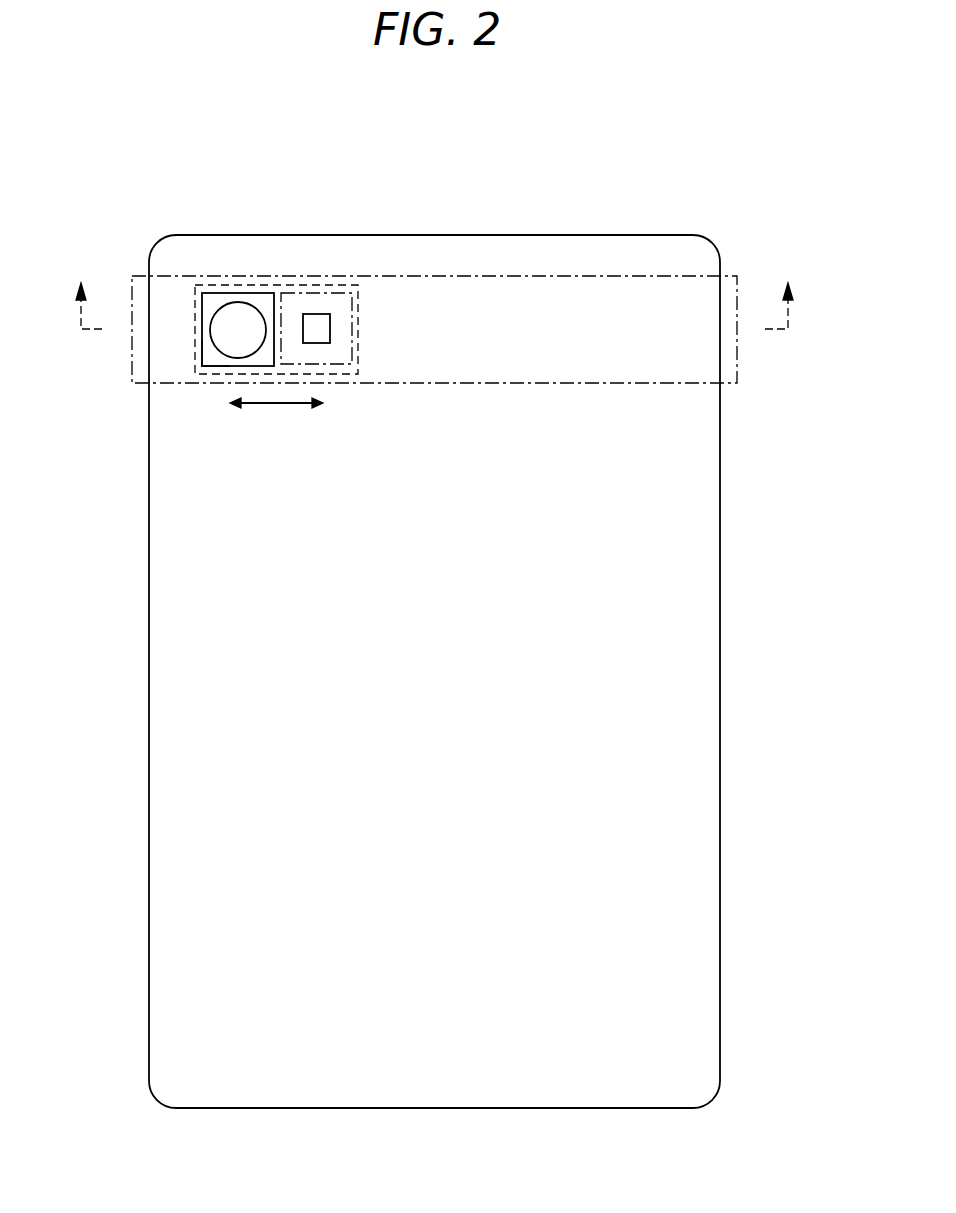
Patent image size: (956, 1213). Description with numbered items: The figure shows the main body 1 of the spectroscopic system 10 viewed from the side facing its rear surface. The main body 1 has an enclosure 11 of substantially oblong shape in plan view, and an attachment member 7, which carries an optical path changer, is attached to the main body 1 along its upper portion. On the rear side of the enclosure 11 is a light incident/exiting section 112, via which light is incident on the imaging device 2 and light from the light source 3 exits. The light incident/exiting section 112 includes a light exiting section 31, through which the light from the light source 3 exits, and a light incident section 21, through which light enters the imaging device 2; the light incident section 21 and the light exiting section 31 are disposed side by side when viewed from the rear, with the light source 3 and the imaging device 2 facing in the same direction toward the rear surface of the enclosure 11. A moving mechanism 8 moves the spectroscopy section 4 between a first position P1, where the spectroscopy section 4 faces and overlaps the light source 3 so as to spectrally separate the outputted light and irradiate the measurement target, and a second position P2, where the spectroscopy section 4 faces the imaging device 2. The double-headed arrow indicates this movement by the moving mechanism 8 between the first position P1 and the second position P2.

The spectroscopic system 10 is at (140, 177).
The main body 1 is at (687, 215).
The enclosure 11 is at (578, 235).
The attachment member 7 is at (480, 276).
The light incident/exiting section 112 is at (300, 285).
The light exiting section 31 is at (227, 317).
The light source 3 is at (209, 322).
The spectroscopy section 4 is at (212, 357).
The light incident section 21 is at (318, 328).
The imaging device 2 is at (332, 337).
The moving mechanism 8 is at (278, 405).
The first position P1 is at (238, 293).
The second position P2 is at (338, 293).